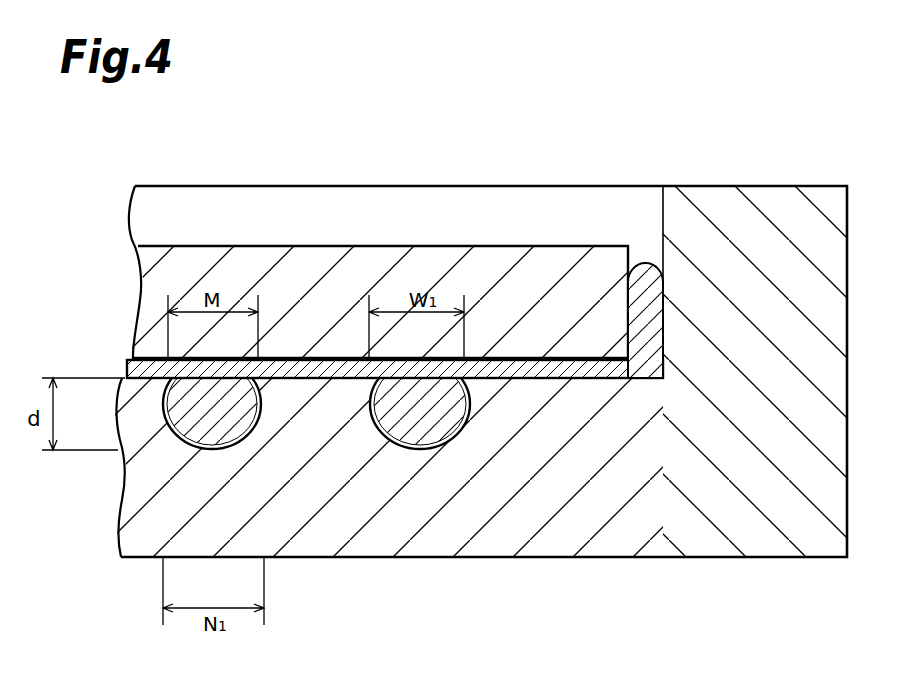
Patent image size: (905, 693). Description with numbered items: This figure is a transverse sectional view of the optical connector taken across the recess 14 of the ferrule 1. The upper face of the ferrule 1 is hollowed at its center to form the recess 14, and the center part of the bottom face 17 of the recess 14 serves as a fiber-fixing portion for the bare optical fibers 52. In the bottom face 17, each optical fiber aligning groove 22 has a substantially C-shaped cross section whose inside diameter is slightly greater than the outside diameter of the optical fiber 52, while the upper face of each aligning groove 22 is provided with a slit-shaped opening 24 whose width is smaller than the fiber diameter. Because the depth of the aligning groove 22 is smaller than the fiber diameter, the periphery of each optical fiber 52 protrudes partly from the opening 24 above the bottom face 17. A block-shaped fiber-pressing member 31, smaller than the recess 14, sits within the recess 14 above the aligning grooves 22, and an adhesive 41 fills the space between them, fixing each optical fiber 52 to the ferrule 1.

The ferrule 1 is at (793, 168).
The recess 14 is at (531, 186).
The bottom face 17 is at (617, 377).
The optical fiber aligning groove 22 is at (265, 397).
The slit-shaped opening 24 is at (131, 360).
The fiber-pressing member 31 is at (382, 246).
The adhesive 41 is at (643, 263).
The optical fiber 52 is at (434, 427).